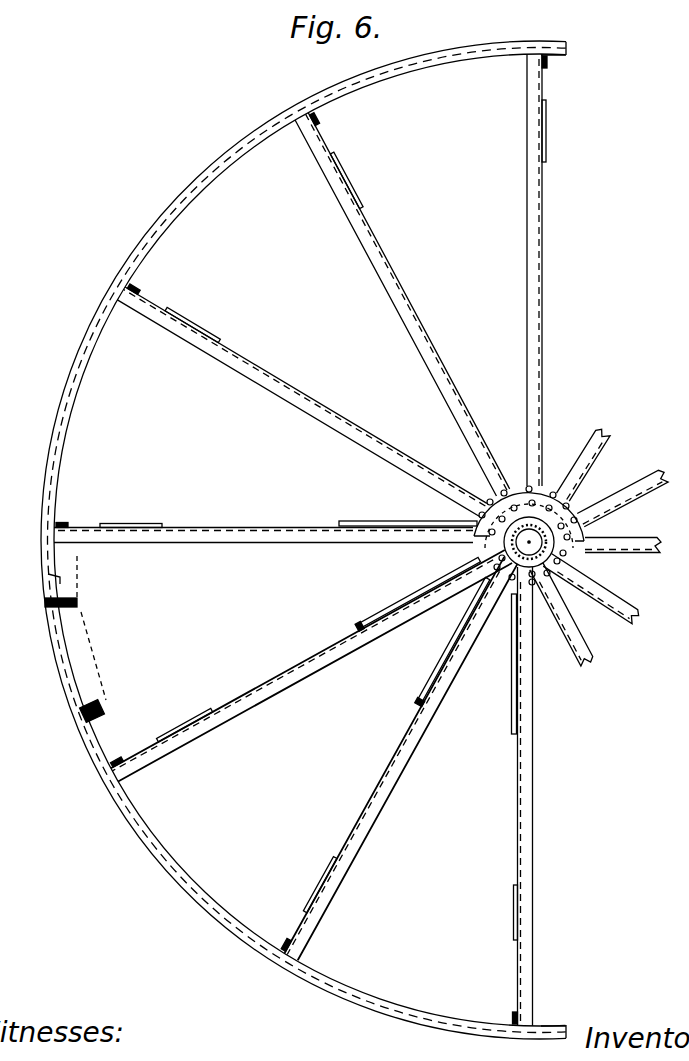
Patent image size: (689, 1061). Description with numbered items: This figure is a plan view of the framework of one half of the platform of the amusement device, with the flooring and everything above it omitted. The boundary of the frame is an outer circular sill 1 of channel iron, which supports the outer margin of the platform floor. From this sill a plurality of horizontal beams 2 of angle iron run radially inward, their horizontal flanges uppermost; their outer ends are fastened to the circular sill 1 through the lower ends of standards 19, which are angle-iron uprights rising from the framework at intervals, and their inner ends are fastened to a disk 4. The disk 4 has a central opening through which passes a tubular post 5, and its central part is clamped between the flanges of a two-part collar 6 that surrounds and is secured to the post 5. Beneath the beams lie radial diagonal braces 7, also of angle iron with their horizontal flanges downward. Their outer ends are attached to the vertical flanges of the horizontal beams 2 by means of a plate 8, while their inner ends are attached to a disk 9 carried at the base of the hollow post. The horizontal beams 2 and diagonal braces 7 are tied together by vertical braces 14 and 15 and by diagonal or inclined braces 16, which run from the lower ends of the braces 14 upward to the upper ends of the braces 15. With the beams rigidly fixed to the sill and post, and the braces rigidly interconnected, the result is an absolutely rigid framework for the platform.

The outer circular sill 1 is at (163, 227).
The horizontal beams 2 is at (526, 280).
The disk 4 is at (546, 483).
The tubular post 5 is at (628, 462).
The two-part collar 6 is at (514, 486).
The diagonal braces 7 is at (247, 720).
The plate 8 is at (150, 526).
The disk 9 is at (562, 572).
The vertical braces 14 is at (357, 623).
The vertical braces 15 is at (516, 569).
The diagonal or inclined braces 16 is at (422, 523).
The standards 19 is at (72, 526).